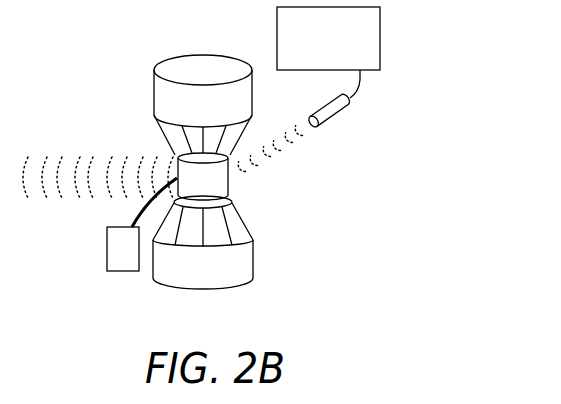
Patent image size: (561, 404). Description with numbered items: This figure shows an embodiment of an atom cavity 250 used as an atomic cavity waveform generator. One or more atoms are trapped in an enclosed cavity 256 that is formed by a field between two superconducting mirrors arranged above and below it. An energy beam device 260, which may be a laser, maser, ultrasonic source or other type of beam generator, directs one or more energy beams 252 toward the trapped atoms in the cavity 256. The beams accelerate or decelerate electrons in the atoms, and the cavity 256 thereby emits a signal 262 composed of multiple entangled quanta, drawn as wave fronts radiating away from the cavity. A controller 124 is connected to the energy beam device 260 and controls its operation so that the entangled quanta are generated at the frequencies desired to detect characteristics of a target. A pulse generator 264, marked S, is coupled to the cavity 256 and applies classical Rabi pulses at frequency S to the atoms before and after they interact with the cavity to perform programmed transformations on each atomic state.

The atom cavity 250 is at (124, 29).
The controller 124 is at (328, 38).
The energy beam 252 is at (290, 151).
The cavity 256 is at (184, 189).
The energy beam device 260 is at (327, 125).
The signal 262 is at (87, 153).
The pulse generator 264 is at (107, 247).